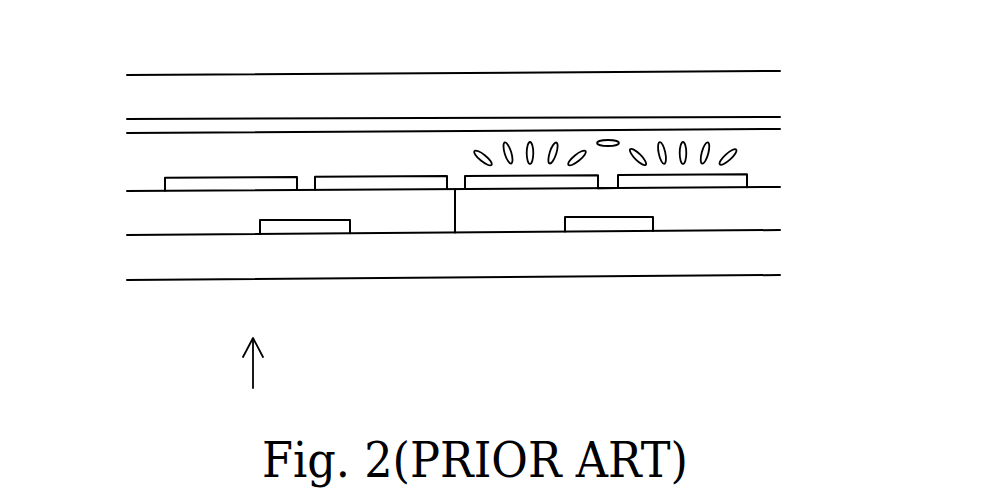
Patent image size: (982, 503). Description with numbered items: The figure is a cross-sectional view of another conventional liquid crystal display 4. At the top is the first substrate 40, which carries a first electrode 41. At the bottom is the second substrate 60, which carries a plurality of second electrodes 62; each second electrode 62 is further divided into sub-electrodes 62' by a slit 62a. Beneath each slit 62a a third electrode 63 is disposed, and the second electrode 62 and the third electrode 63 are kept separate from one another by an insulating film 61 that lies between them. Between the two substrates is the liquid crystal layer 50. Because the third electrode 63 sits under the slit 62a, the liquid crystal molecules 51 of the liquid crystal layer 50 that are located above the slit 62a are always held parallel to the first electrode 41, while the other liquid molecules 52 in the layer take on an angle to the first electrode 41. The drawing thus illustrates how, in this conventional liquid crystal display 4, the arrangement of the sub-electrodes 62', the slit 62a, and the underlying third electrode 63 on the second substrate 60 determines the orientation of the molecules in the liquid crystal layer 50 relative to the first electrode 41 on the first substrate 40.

The first substrate 40 is at (770, 90).
The first electrode 41 is at (772, 120).
The liquid crystal layer 50 is at (763, 157).
The liquid crystal molecules 51 is at (608, 140).
The liquid molecules 52 is at (557, 143).
The second substrate 60 is at (750, 257).
The insulating film 61 is at (750, 218).
The second electrode 62 is at (186, 164).
The sub-electrode 62' is at (453, 256).
The slit 62a is at (608, 178).
The third electrode 63 is at (285, 228).
The liquid crystal display 4 is at (253, 380).